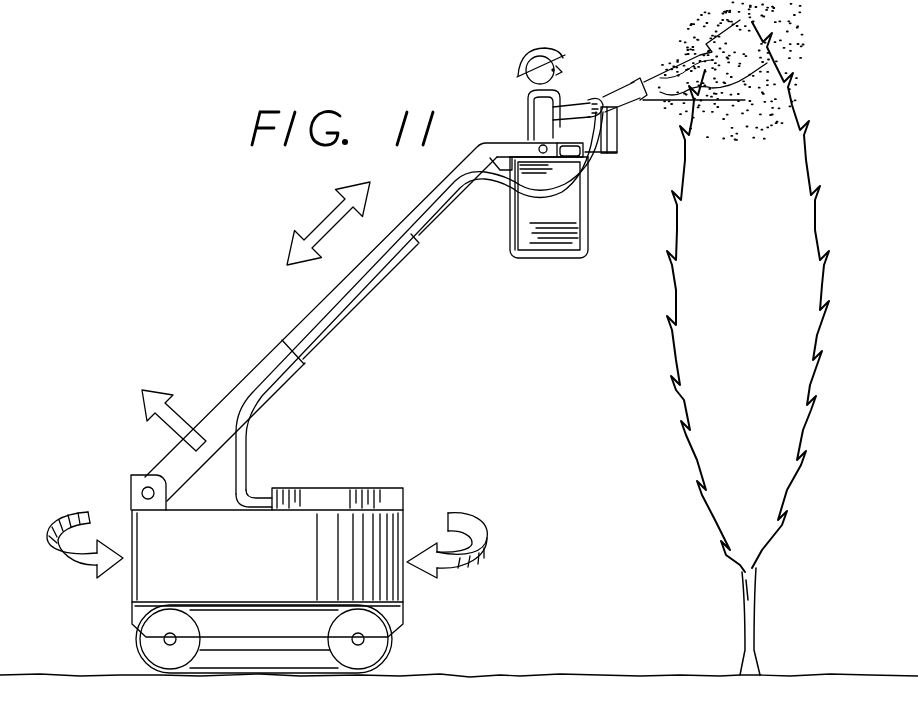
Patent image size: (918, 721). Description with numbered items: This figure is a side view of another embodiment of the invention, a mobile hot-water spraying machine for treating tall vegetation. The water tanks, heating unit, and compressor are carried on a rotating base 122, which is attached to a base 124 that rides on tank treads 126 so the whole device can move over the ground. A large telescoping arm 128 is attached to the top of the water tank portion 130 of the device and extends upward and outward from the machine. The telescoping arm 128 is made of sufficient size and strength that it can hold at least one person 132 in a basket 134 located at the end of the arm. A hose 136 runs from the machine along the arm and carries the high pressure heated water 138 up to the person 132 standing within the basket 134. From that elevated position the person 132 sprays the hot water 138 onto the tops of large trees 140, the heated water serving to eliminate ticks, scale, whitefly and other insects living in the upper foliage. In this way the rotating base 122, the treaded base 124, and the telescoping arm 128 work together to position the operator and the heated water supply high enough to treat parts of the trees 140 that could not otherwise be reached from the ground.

The rotating base 122 is at (383, 538).
The base 124 is at (130, 610).
The tank treads 126 is at (273, 675).
The telescoping arm 128 is at (330, 331).
The water tank portion 130 is at (292, 513).
The person 132 is at (522, 103).
The basket 134 is at (550, 230).
The hose 136 is at (338, 306).
The high pressure heated water 138 is at (670, 67).
The large trees 140 is at (720, 357).